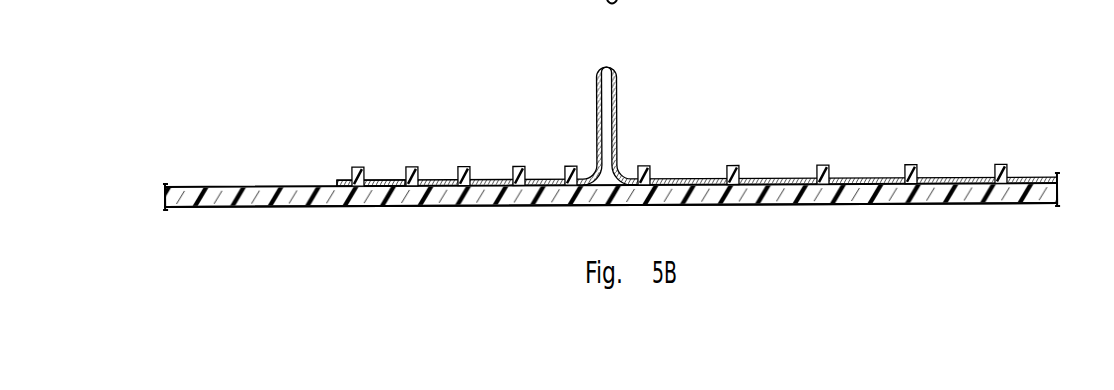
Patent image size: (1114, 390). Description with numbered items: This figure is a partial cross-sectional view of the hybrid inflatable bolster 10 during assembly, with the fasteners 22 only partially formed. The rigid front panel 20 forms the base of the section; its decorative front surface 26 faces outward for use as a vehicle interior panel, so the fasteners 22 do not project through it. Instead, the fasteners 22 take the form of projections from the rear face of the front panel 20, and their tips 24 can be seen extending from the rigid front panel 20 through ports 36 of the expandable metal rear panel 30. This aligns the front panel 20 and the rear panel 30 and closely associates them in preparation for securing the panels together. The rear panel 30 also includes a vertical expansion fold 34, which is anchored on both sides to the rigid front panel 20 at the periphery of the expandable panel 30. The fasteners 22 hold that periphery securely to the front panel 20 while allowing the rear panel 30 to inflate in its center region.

The hybrid inflatable bolster 10 is at (1016, 105).
The rigid front panel 20 is at (232, 208).
The fasteners 22 is at (410, 172).
The fastener tips 24 is at (467, 167).
The decorative front surface 26 is at (858, 206).
The expandable metal rear panel 30 is at (337, 179).
The vertical expansion fold 34 is at (619, 70).
The ports 36 is at (376, 182).